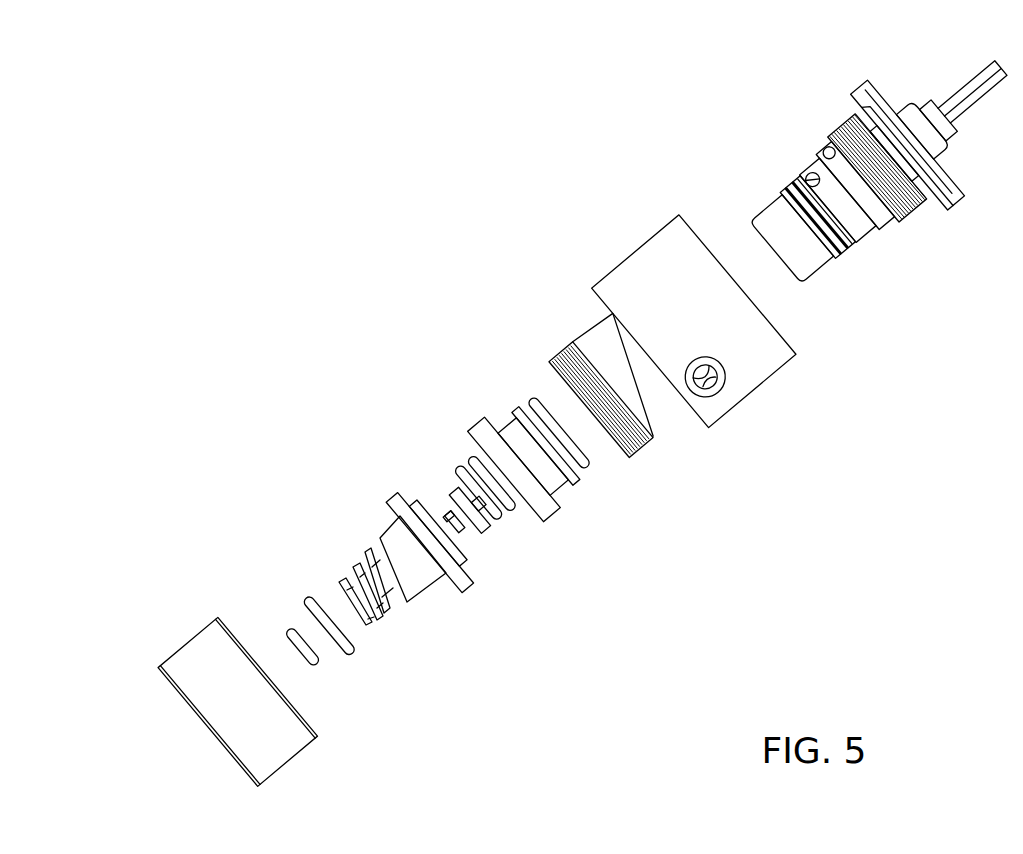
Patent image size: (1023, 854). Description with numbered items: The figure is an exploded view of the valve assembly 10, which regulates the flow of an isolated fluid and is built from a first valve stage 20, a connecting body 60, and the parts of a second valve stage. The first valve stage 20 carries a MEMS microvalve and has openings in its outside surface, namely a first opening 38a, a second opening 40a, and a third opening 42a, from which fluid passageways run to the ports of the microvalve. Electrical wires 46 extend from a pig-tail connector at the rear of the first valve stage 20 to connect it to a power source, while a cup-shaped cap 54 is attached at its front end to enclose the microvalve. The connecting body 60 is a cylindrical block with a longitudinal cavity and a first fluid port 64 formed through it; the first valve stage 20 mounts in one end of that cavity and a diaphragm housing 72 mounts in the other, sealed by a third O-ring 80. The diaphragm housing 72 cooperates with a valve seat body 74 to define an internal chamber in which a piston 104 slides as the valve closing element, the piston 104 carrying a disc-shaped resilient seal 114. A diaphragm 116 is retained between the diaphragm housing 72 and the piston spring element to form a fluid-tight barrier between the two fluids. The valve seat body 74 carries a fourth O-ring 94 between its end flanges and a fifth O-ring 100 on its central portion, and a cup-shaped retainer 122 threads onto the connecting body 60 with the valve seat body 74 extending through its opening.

The valve assembly 10 is at (470, 125).
The first valve stage 20 is at (858, 187).
The first opening 38a is at (805, 178).
The second opening 40a is at (825, 148).
The third opening 42a is at (838, 262).
The electrical wires 46 is at (967, 92).
The cap 54 is at (812, 277).
The connecting body 60 is at (638, 251).
The first fluid port 64 is at (705, 395).
The diaphragm housing 72 is at (481, 421).
The valve seat body 74 is at (388, 530).
The third O-ring 80 is at (592, 466).
The fourth O-ring 94 is at (288, 632).
The fifth O-ring 100 is at (354, 656).
The piston 104 is at (453, 490).
The resilient seal 114 is at (462, 527).
The diaphragm 116 is at (517, 521).
The retainer 122 is at (288, 765).